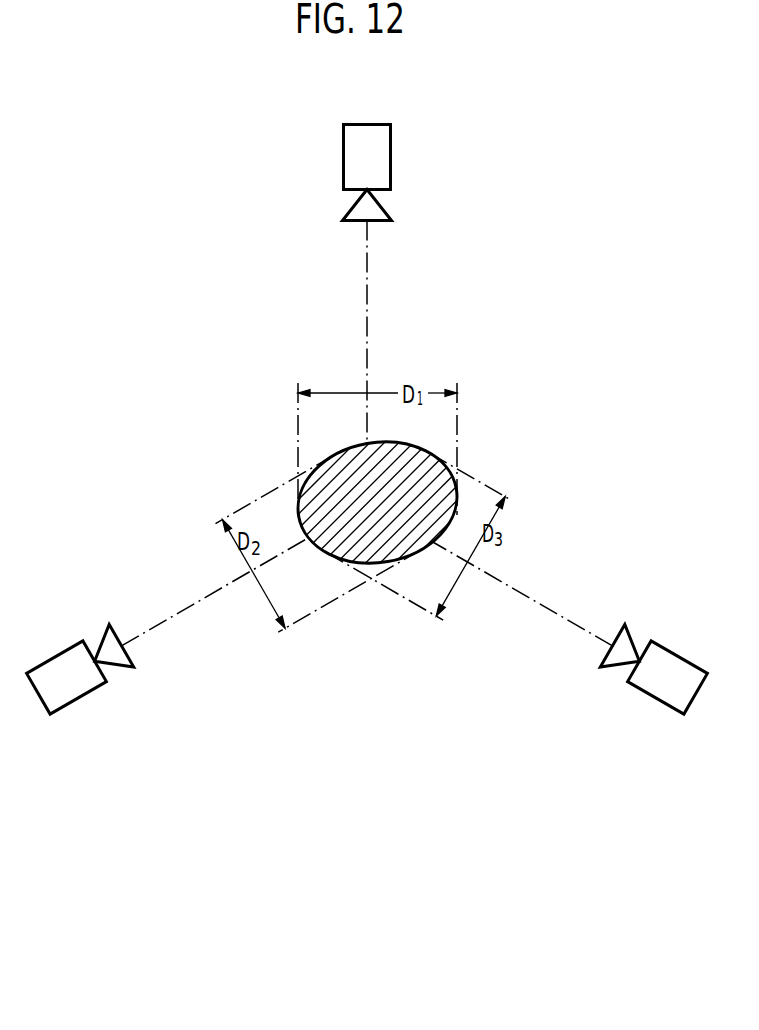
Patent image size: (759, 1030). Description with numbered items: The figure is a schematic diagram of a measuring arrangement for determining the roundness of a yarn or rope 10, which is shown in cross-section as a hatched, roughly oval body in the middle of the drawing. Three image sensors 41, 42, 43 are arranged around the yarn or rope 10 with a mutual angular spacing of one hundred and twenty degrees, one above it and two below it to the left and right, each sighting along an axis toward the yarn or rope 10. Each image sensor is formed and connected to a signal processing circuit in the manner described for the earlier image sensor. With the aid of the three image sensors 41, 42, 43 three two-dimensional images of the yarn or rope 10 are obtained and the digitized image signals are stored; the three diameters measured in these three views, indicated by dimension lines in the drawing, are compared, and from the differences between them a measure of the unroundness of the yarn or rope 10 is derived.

The yarn or rope 10 is at (337, 482).
The image sensor 41 is at (350, 146).
The image sensor 42 is at (53, 672).
The image sensor 43 is at (683, 667).